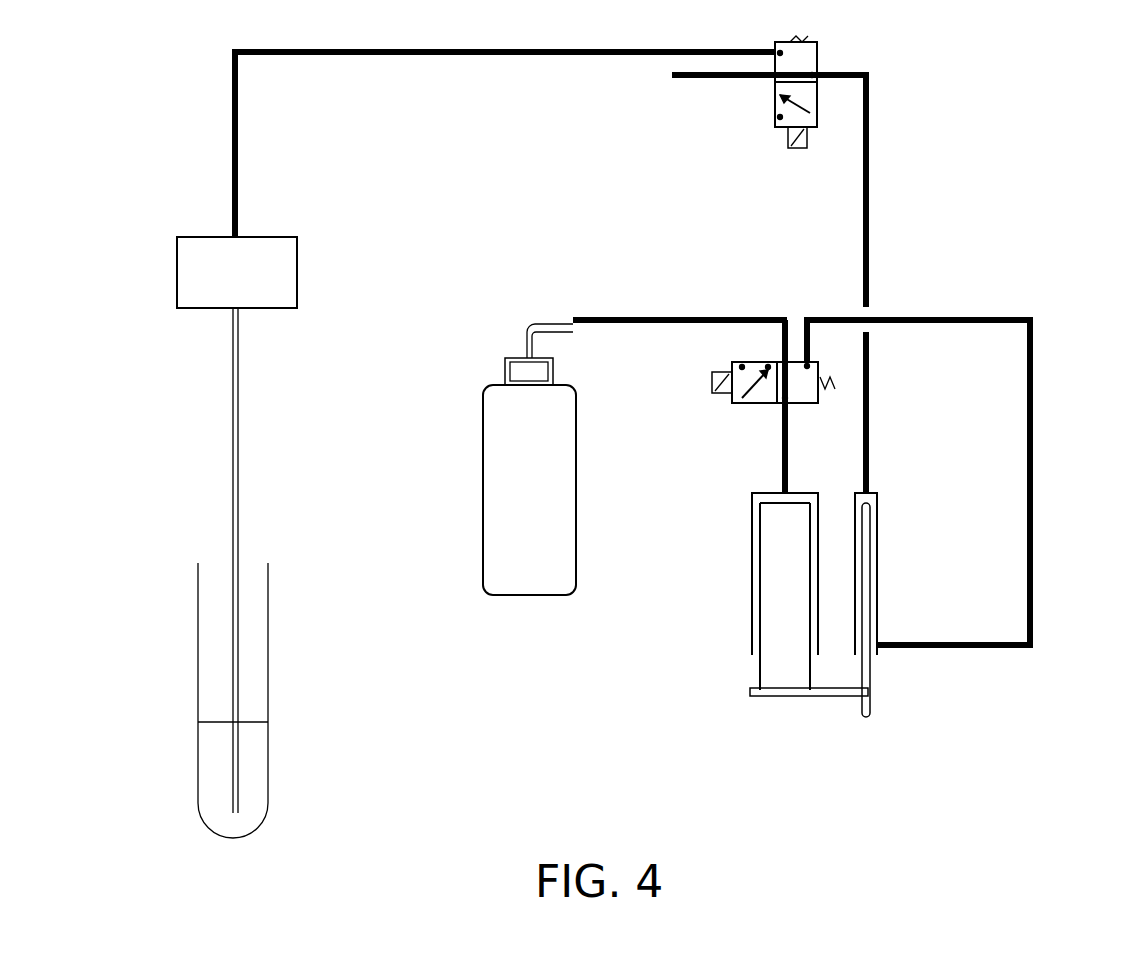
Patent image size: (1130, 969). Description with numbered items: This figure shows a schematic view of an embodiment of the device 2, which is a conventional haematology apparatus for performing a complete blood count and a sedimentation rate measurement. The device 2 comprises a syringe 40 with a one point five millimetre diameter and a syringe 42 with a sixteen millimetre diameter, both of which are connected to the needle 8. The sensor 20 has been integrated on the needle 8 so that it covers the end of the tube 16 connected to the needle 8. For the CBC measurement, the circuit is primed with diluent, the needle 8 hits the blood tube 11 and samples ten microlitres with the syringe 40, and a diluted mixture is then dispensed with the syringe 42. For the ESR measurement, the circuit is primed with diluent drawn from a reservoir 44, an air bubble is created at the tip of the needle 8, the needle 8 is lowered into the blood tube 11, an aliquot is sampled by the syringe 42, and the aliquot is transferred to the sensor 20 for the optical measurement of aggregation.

The device 2 is at (919, 199).
The needle 8 is at (233, 450).
The blood tube 11 is at (198, 718).
The tube 16 is at (228, 67).
The sensor 20 is at (177, 258).
The syringe 40 is at (889, 605).
The syringe 42 is at (789, 594).
The reservoir 44 is at (529, 459).